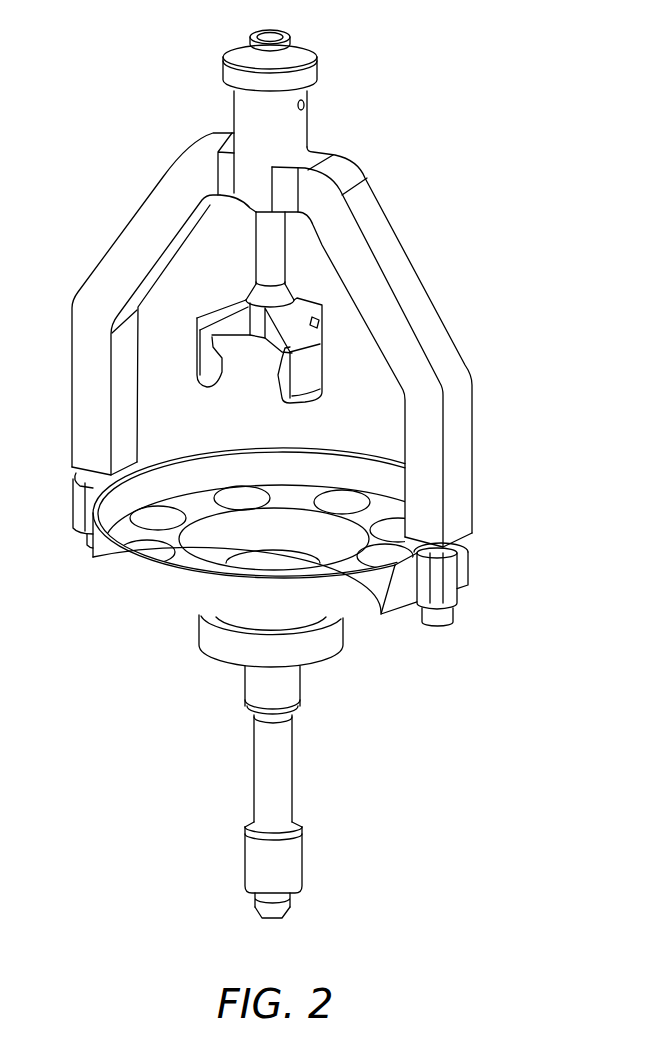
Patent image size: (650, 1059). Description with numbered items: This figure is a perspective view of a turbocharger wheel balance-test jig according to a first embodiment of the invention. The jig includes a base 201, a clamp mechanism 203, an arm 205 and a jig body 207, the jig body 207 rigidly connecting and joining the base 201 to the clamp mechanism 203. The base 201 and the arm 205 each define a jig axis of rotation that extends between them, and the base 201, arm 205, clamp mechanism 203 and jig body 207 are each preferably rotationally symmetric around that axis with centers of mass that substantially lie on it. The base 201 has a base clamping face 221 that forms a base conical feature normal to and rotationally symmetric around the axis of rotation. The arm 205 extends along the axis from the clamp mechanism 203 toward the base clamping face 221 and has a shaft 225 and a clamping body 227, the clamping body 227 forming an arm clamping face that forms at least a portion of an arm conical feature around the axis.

The base 201 is at (167, 598).
The clamp mechanism 203 is at (228, 70).
The arm 205 is at (277, 253).
The jig body 207 is at (113, 268).
The base clamping face 221 is at (360, 470).
The shaft 225 is at (267, 233).
The clamping body 227 is at (303, 333).